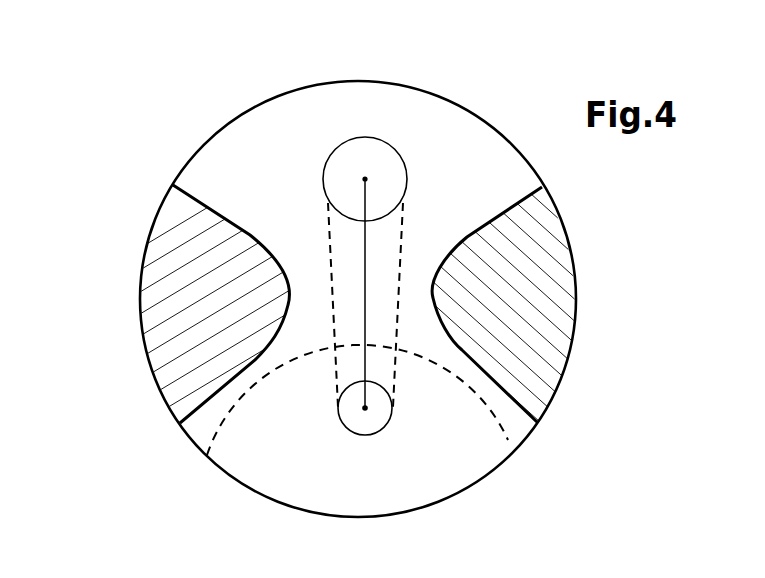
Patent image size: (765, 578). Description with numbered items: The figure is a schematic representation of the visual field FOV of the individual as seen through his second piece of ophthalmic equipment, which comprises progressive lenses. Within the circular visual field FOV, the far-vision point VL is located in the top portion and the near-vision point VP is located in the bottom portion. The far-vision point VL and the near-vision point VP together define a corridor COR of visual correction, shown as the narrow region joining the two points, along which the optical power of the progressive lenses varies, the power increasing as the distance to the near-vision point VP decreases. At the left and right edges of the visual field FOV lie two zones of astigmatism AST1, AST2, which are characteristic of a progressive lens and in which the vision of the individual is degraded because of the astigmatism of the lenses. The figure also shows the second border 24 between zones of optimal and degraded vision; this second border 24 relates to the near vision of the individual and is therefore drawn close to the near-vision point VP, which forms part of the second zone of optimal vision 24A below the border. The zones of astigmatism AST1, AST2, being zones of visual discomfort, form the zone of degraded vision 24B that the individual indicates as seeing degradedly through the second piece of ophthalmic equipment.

The visual field FOV is at (470, 110).
The far-vision point VL is at (366, 138).
The near-vision point VP is at (366, 408).
The corridor of visual correction COR is at (380, 262).
The zone of astigmatism AST1 is at (557, 273).
The zone of astigmatism AST2 is at (165, 328).
The second border 24 is at (237, 422).
The second zone of optimal vision 24A is at (390, 499).
The zone of degraded vision 24B is at (307, 290).